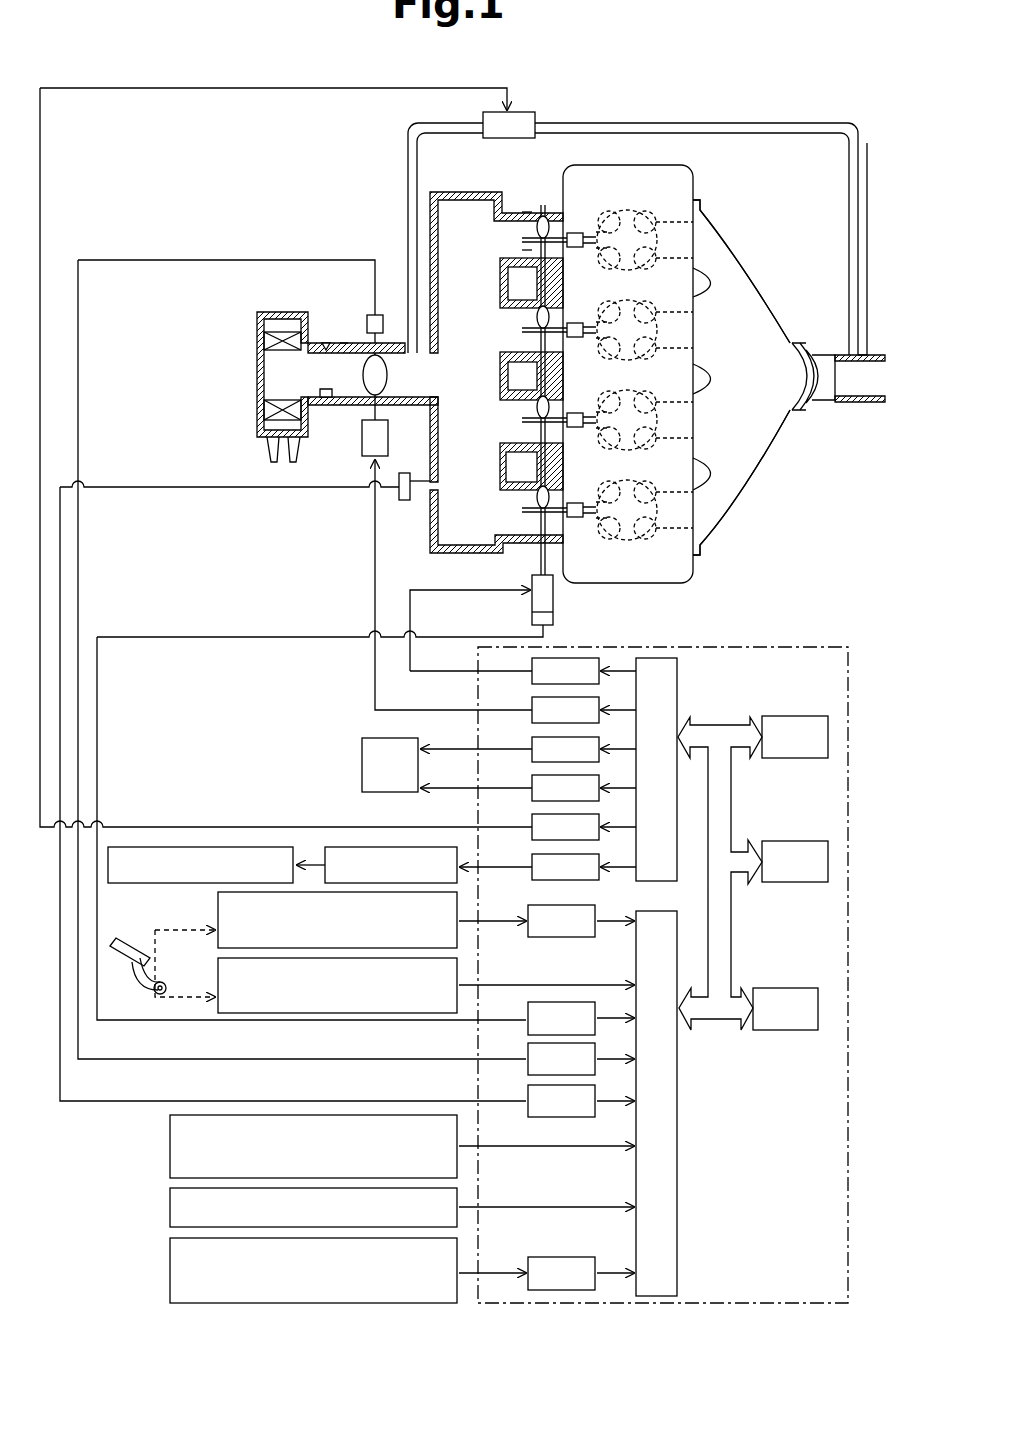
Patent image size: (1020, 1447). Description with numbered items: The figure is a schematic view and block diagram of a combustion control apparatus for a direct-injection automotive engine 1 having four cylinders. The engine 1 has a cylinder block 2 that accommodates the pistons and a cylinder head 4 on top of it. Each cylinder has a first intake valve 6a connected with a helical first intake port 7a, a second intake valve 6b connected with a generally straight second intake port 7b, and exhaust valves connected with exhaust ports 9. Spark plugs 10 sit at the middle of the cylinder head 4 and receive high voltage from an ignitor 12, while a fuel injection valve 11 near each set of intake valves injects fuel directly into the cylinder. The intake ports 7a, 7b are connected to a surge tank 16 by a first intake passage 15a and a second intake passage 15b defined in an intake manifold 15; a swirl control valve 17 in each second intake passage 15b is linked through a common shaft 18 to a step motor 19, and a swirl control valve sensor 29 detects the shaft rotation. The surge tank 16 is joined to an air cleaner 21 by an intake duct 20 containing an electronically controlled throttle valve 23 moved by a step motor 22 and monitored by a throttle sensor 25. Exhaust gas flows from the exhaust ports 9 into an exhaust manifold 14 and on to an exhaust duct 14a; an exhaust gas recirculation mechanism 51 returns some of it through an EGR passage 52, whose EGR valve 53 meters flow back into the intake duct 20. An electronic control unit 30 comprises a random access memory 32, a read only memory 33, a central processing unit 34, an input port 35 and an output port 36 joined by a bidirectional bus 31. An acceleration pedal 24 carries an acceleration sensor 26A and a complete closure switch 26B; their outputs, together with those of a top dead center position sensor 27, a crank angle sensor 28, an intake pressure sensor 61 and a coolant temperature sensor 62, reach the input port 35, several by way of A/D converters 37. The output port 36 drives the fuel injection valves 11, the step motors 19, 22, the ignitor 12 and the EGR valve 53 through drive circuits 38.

The engine 1 is at (697, 168).
The cylinder block 2 is at (676, 584).
The cylinder head 4 is at (741, 377).
The first intake valve 6a is at (605, 262).
The second intake valve 6b is at (648, 215).
The first intake port 7a is at (600, 592).
The second intake port 7b is at (602, 200).
The exhaust port 9 is at (695, 262).
The spark plug 10 is at (184, 847).
The fuel injection valve 11 is at (360, 762).
The ignitor 12 is at (410, 847).
The exhaust manifold 14 is at (790, 425).
The exhaust duct 14a is at (859, 404).
The intake manifold 15 is at (514, 208).
The first intake passage 15a is at (534, 256).
The second intake passage 15b is at (530, 223).
The surge tank 16 is at (428, 214).
The swirl control valve 17 is at (537, 187).
The common shaft 18 is at (510, 378).
The step motor 19 is at (530, 610).
The intake duct 20 is at (346, 344).
The air cleaner 21 is at (257, 419).
The step motor 22 is at (388, 440).
The throttle valve 23 is at (387, 375).
The acceleration pedal 24 is at (112, 966).
The throttle sensor 25 is at (367, 314).
The acceleration sensor 26A is at (215, 925).
The complete closure switch 26B is at (215, 998).
The top dead center position sensor 27 is at (168, 1152).
The crank angle sensor 28 is at (168, 1212).
The swirl control valve sensor 29 is at (553, 620).
The electronic control unit 30 is at (778, 645).
The bidirectional bus 31 is at (724, 725).
The random access memory 32 is at (802, 715).
The read only memory 33 is at (808, 839).
The central processing unit 34 is at (810, 988).
The input port 35 is at (678, 1238).
The output port 36 is at (678, 667).
The A/D converter 37 is at (526, 903).
The drive circuit 38 is at (524, 690).
The exhaust gas recirculation mechanism 51 is at (638, 115).
The EGR passage 52 is at (790, 123).
The EGR valve 53 is at (535, 107).
The intake pressure sensor 61 is at (403, 500).
The coolant temperature sensor 62 is at (168, 1276).